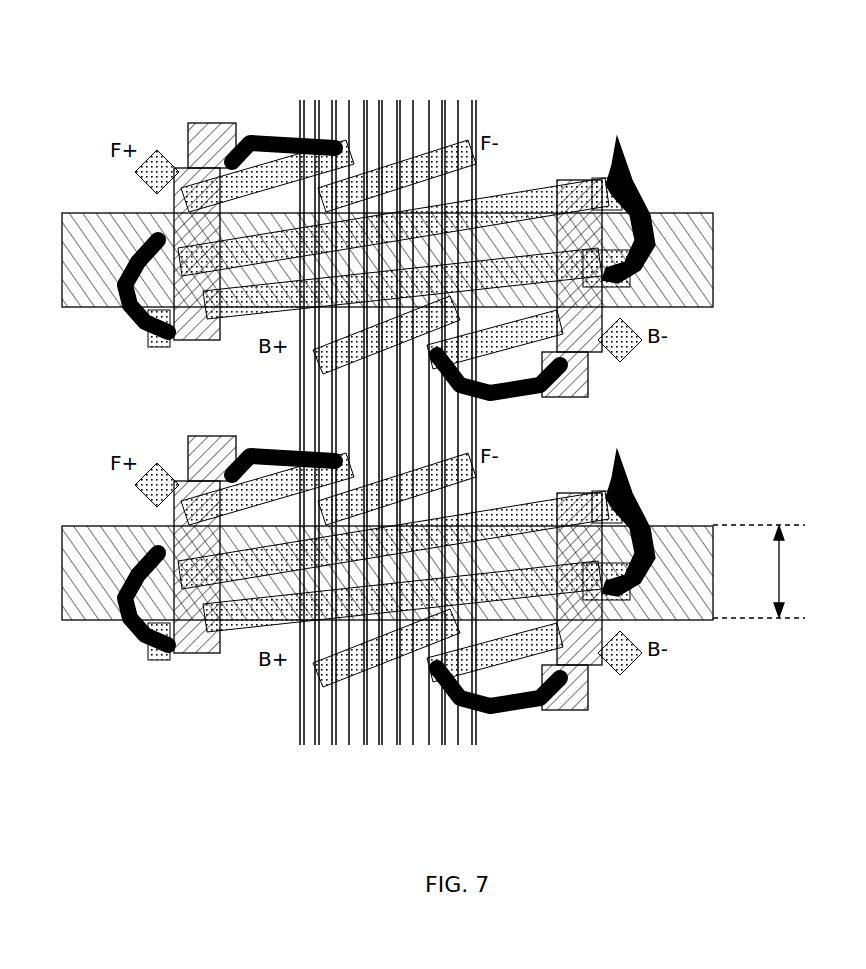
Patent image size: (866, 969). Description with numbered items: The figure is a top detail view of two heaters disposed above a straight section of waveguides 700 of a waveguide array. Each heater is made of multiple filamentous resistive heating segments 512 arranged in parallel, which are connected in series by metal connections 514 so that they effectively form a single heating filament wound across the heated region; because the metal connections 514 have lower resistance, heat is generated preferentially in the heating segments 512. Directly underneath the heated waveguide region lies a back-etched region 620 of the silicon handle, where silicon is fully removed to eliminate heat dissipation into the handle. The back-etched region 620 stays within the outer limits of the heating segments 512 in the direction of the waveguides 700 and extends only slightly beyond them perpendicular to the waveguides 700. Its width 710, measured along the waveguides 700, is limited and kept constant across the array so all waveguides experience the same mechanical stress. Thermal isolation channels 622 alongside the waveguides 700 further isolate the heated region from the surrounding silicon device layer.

The heating segments 512 is at (283, 272).
The metal connections 514 is at (253, 437).
The back-etched region 620 is at (710, 267).
The thermal isolation channels 622 is at (570, 180).
The waveguides 700 is at (420, 95).
The width 710 is at (771, 571).